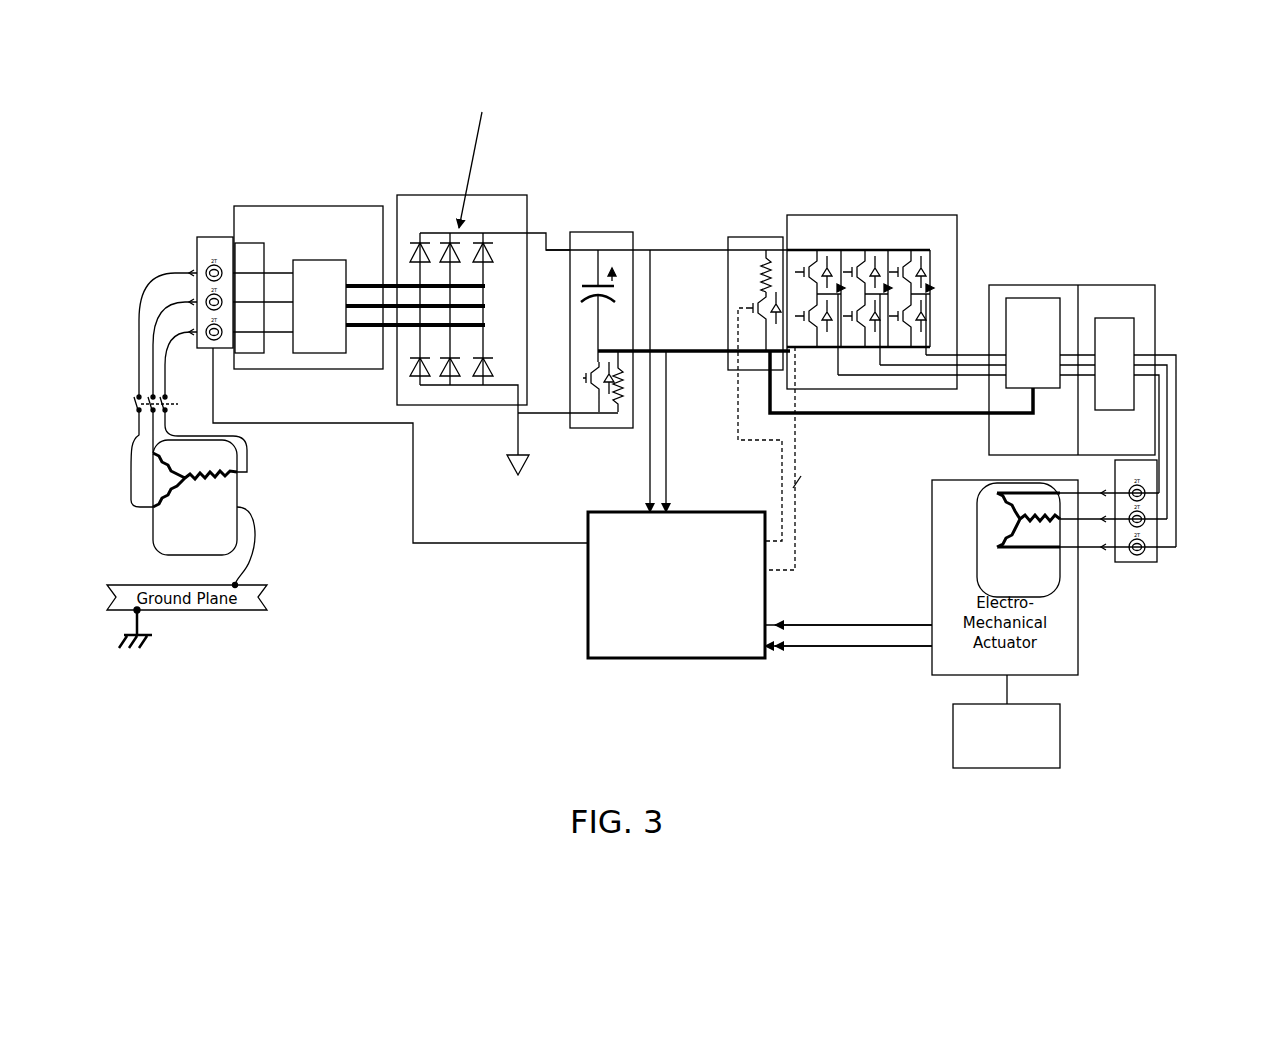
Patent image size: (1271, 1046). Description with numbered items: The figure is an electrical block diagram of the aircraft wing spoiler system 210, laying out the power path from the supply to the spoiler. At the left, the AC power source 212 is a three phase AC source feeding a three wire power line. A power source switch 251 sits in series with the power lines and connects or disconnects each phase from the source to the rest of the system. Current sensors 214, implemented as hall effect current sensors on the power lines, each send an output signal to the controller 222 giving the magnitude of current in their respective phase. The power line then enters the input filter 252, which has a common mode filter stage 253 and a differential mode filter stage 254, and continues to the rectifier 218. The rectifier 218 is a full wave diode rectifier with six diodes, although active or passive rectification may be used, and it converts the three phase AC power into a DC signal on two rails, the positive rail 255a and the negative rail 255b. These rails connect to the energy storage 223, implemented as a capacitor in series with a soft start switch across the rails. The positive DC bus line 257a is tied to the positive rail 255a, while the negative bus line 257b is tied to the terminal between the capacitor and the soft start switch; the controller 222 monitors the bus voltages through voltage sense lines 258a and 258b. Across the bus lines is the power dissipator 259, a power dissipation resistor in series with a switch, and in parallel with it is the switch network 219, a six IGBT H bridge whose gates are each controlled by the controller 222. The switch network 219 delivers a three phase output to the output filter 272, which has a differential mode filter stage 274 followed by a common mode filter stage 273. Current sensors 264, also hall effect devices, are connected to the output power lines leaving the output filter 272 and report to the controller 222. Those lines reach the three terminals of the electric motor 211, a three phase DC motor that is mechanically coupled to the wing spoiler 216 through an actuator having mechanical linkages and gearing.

The system 210 is at (1103, 128).
The electric motor 211 is at (1030, 530).
The AC power source 212 is at (240, 483).
The current sensors 214 is at (216, 237).
The wing spoiler 216 is at (1062, 742).
The rectifier 218 is at (427, 196).
The switch network 219 is at (918, 215).
The controller 222 is at (678, 659).
The energy storage 223 is at (593, 232).
The power source switch 251 is at (128, 393).
The input filter 252 is at (283, 206).
The common mode filter stage 253 is at (262, 355).
The differential mode filter stage 254 is at (328, 355).
The positive rail 255a is at (532, 233).
The negative rail 255b is at (535, 412).
The positive DC bus line 257a is at (641, 248).
The negative bus line 257b is at (688, 354).
The voltage sense line 258a is at (652, 392).
The voltage sense line 258b is at (668, 437).
The power dissipator 259 is at (757, 237).
The current sensors 264 is at (1140, 562).
The output filter 272 is at (1060, 285).
The common mode filter stage 273 is at (1098, 401).
The differential mode filter stage 274 is at (1017, 381).